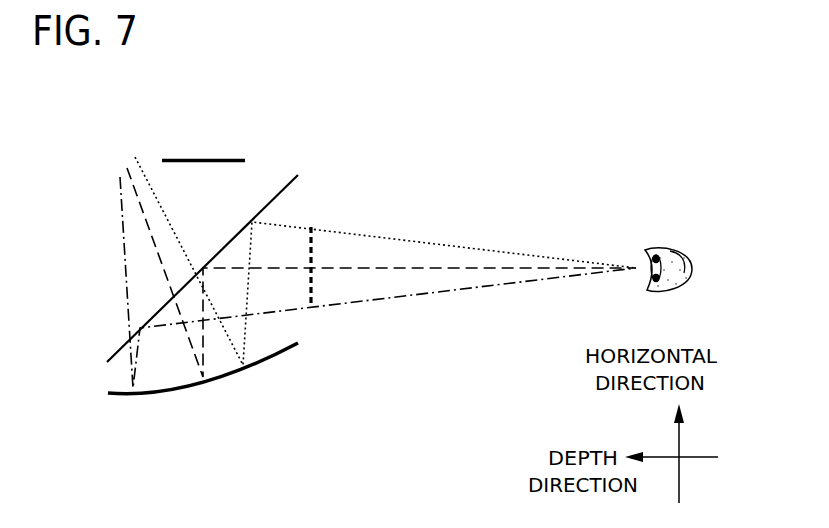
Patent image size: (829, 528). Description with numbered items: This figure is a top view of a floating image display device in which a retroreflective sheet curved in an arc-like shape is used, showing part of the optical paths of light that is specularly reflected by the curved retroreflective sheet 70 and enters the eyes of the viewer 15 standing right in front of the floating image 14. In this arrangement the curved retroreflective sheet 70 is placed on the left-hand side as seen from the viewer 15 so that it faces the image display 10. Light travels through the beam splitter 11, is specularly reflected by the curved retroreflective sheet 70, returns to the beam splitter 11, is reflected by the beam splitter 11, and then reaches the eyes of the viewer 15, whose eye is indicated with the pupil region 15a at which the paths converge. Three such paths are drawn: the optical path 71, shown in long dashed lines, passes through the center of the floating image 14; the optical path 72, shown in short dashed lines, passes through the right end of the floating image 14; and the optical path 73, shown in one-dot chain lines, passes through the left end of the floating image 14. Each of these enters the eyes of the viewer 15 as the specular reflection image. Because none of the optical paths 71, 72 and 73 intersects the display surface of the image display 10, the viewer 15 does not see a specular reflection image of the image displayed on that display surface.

The image display 10 is at (197, 160).
The beam splitter 11 is at (292, 176).
The floating image 14 is at (312, 226).
The viewer 15 is at (670, 250).
The pupil 15a is at (641, 260).
The curved retroreflective sheet 70 is at (108, 393).
The optical path 71 is at (379, 268).
The optical path 72 is at (396, 237).
The optical path 73 is at (474, 288).